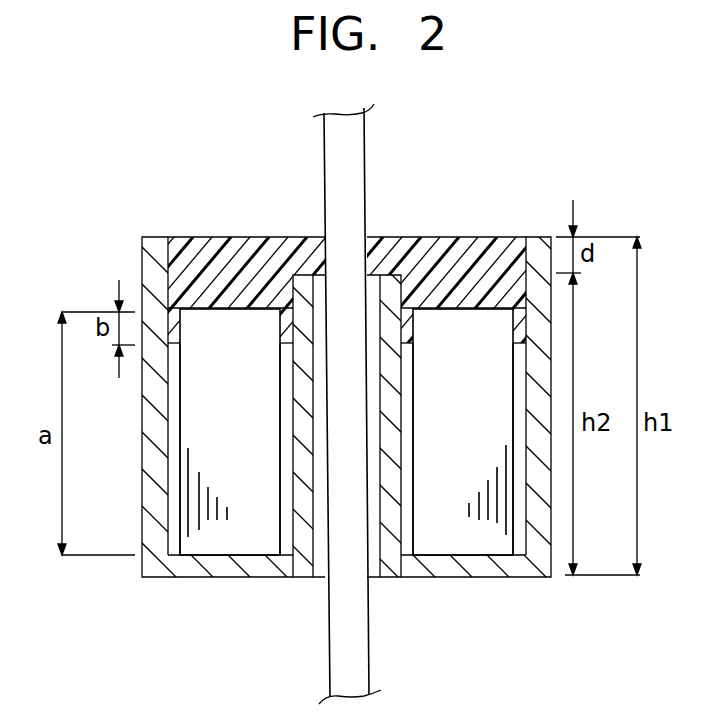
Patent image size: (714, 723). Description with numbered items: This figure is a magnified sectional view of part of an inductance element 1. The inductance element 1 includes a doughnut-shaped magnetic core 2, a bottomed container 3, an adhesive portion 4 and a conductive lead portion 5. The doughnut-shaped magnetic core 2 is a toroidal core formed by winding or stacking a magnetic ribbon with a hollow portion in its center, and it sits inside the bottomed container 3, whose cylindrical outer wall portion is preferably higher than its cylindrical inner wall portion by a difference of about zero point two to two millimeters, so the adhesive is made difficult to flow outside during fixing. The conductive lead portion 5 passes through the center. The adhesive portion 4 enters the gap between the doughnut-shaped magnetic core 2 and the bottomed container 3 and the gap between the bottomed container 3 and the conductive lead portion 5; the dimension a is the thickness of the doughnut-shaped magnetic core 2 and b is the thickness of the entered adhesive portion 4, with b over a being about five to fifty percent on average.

The inductance element 1 is at (530, 168).
The doughnut-shaped magnetic core 2 is at (457, 541).
The bottomed container 3 is at (502, 566).
The adhesive portion 4 is at (232, 246).
The conductive lead portion 5 is at (344, 661).